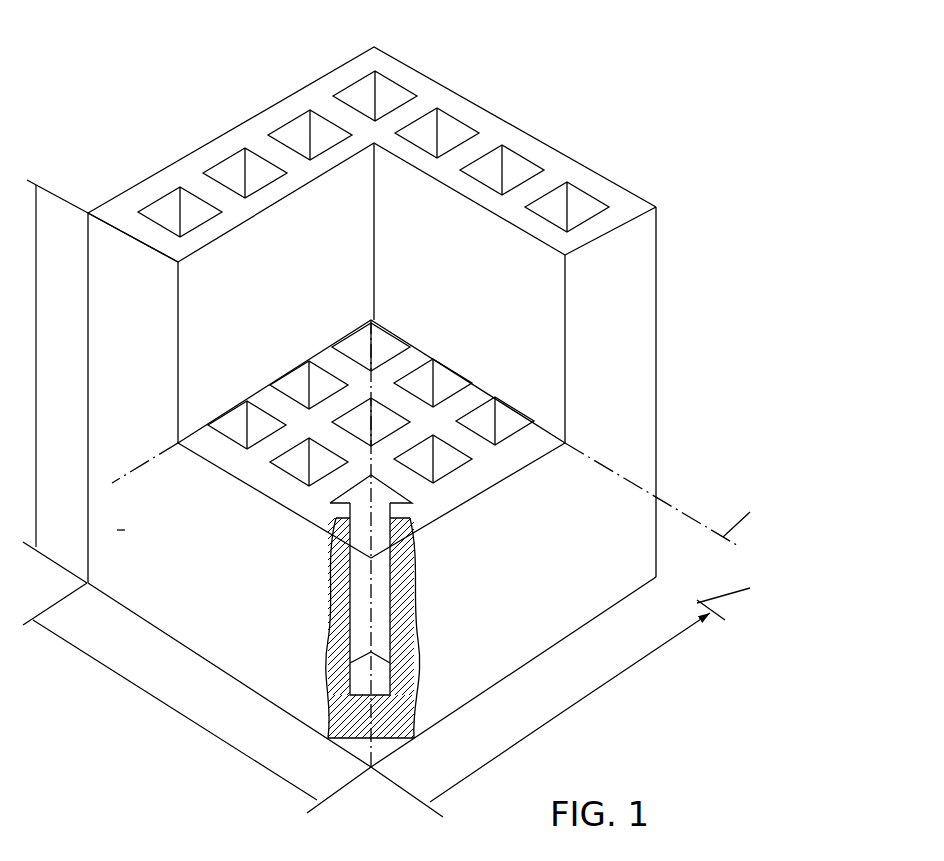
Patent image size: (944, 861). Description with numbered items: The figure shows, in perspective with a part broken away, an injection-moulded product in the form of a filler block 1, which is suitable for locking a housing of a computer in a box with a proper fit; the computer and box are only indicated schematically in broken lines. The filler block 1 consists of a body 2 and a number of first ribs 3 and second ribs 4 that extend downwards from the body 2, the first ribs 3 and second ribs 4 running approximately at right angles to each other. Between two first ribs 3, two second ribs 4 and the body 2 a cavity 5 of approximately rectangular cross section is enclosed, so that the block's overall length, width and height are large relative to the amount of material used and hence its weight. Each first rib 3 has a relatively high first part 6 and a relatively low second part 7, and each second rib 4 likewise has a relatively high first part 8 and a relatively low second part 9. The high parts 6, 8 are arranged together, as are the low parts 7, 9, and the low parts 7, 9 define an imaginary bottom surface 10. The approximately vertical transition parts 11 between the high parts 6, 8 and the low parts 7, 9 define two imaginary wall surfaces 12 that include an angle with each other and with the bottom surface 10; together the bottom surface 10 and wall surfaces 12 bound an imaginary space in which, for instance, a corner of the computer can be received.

The filler block 1 is at (722, 125).
The body 2 is at (382, 700).
The first ribs 3 is at (397, 47).
The second ribs 4 is at (97, 198).
The cavity 5 is at (165, 213).
The first part of first rib 6 is at (242, 142).
The second part of first rib 7 is at (277, 483).
The first part of second rib 8 is at (577, 173).
The second part of second rib 9 is at (280, 447).
The bottom surface 10 is at (433, 420).
The transition parts 11 is at (173, 315).
The wall surfaces 12 is at (294, 276).